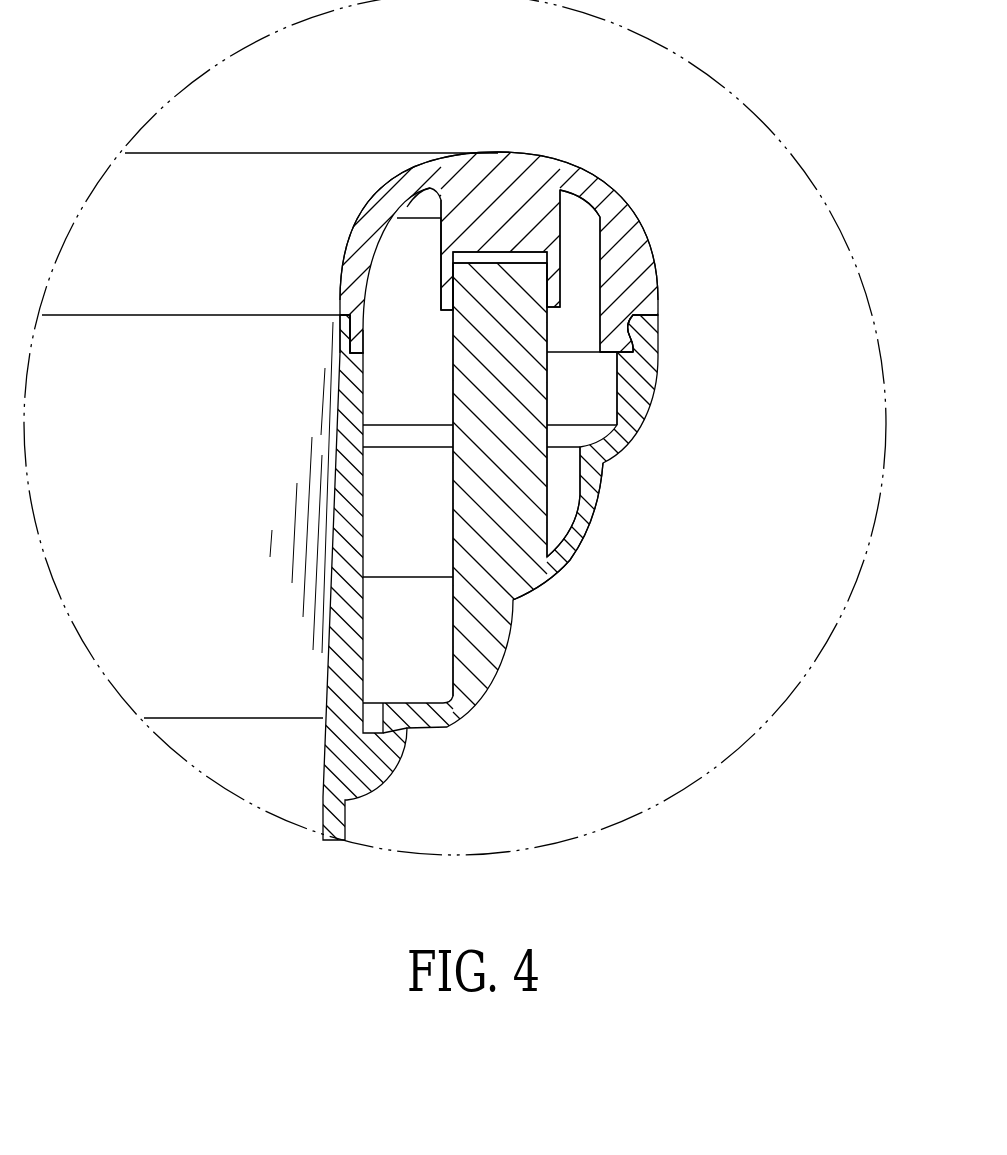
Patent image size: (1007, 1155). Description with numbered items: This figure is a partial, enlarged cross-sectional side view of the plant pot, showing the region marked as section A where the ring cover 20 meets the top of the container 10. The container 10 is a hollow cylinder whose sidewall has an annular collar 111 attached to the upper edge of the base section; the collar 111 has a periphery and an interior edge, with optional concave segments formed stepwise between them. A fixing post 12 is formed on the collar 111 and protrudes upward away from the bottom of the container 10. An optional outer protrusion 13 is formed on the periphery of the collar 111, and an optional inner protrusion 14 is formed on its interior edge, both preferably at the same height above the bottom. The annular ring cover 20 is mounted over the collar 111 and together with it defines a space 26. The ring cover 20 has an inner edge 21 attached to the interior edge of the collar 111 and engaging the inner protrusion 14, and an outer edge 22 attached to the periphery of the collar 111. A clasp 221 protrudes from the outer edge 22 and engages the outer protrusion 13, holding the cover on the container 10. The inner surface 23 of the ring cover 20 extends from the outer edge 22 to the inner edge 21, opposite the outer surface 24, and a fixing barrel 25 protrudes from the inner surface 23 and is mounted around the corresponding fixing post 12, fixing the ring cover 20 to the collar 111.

The container 10 is at (499, 702).
The collar 111 is at (575, 515).
The fixing post 12 is at (470, 389).
The outer protrusion 13 is at (643, 328).
The inner protrusion 14 is at (343, 352).
The ring cover 20 is at (627, 193).
The inner edge 21 is at (358, 315).
The outer edge 22 is at (623, 285).
The clasp 221 is at (620, 343).
The inner surface 23 is at (440, 207).
The outer surface 24 is at (410, 183).
The fixing barrel 25 is at (443, 257).
The space 26 is at (423, 516).
The section A is at (192, 80).